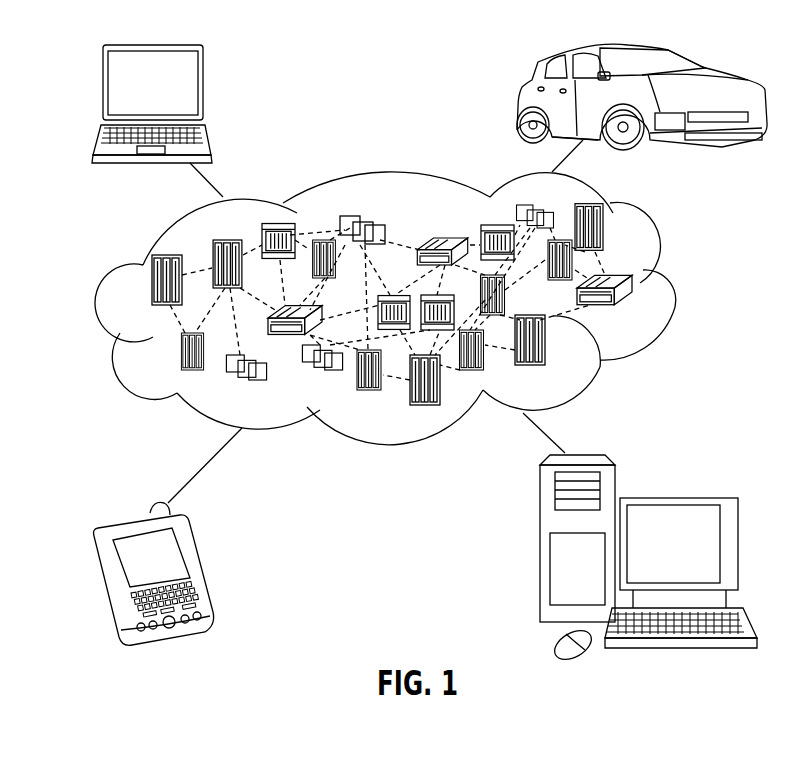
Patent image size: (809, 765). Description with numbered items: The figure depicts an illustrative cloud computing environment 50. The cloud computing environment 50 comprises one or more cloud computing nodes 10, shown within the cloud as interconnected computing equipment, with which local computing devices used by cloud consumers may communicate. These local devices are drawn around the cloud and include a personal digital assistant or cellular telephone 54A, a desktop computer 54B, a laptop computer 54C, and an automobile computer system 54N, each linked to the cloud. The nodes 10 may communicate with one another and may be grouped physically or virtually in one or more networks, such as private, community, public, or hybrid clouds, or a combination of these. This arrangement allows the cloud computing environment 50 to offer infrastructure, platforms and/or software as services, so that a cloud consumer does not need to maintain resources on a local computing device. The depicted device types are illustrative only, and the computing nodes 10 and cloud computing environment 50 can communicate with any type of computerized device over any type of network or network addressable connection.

The cloud computing nodes 10 is at (640, 310).
The cloud computing environment 50 is at (681, 288).
The personal digital assistant or cellular telephone 54A is at (199, 566).
The desktop computer 54B is at (676, 496).
The laptop computer 54C is at (203, 90).
The automobile computer system 54N is at (521, 101).